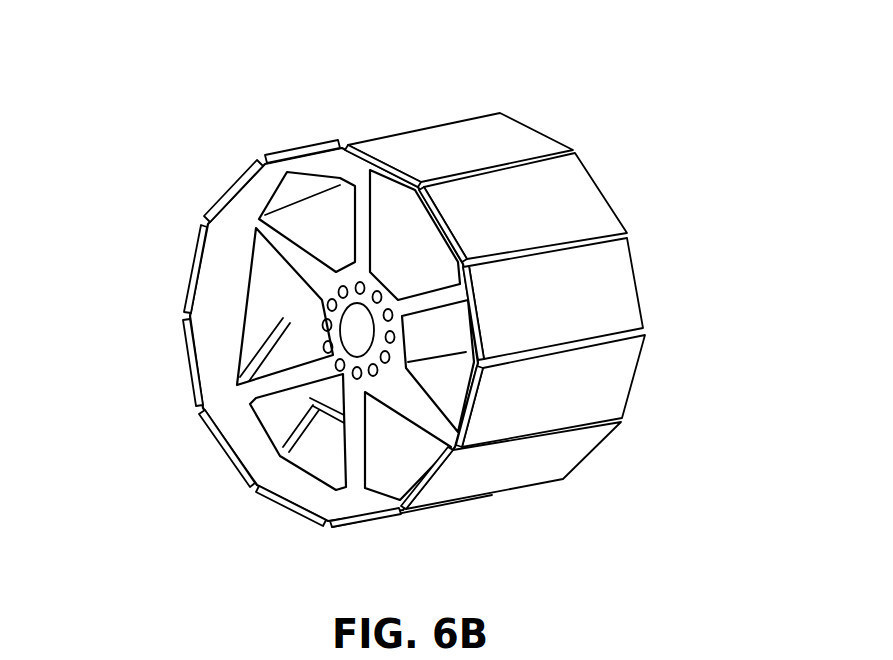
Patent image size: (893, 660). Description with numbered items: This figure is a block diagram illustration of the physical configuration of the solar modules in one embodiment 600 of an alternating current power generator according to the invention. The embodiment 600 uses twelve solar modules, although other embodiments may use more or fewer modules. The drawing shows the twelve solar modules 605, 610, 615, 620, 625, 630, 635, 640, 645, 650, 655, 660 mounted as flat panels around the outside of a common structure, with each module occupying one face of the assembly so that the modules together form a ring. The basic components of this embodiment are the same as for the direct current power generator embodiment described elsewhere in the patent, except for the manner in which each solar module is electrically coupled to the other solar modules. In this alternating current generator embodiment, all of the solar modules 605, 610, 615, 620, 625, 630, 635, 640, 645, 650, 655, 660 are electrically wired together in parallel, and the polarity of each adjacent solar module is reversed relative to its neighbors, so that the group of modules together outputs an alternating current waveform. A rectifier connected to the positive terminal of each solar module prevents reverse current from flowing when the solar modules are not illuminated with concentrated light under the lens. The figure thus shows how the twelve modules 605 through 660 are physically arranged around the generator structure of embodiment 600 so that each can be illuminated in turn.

The embodiment 600 is at (480, 64).
The solar module 605 is at (517, 143).
The solar module 610 is at (580, 207).
The solar module 615 is at (610, 297).
The solar module 620 is at (618, 395).
The solar module 625 is at (570, 452).
The solar module 630 is at (360, 515).
The solar module 635 is at (293, 500).
The solar module 640 is at (220, 443).
The solar module 645 is at (193, 350).
The solar module 650 is at (197, 268).
The solar module 655 is at (233, 177).
The solar module 660 is at (327, 150).